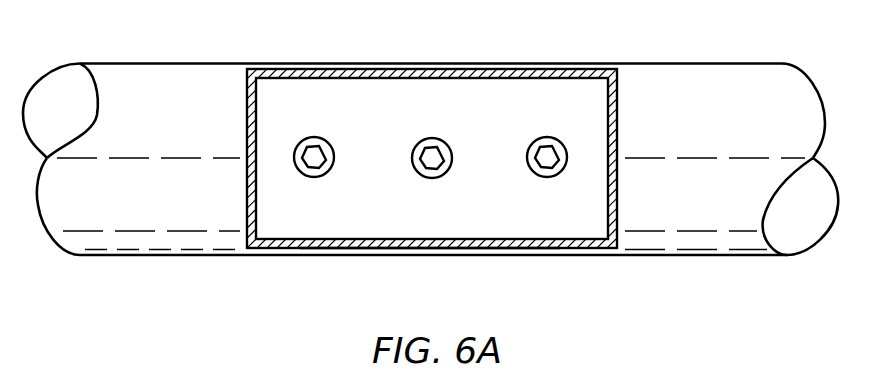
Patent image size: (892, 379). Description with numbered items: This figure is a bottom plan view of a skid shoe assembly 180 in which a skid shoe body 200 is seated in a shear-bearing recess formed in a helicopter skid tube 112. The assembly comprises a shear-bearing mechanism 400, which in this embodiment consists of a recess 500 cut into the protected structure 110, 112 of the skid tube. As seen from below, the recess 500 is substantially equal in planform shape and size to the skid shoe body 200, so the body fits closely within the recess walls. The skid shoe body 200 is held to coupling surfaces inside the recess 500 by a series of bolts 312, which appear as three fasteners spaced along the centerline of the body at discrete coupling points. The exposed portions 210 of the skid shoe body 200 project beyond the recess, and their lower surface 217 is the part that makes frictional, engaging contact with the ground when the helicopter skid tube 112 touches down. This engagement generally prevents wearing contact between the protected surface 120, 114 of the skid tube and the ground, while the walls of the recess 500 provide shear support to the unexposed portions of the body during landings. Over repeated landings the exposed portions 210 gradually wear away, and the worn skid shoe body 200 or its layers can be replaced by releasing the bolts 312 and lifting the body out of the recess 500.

The protected surface 120 is at (424, 91).
The protected surface 114 is at (192, 97).
The protected structure 110 is at (437, 230).
The helicopter skid tube 112 is at (178, 256).
The exposed portions 210 is at (432, 158).
The lower surface 217 is at (590, 205).
The bolt 312 is at (316, 160).
The shear-bearing mechanism 400 is at (372, 250).
The recess 500 is at (473, 246).
The skid shoe body 200 is at (522, 246).
The skid shoe assembly 180 is at (624, 298).